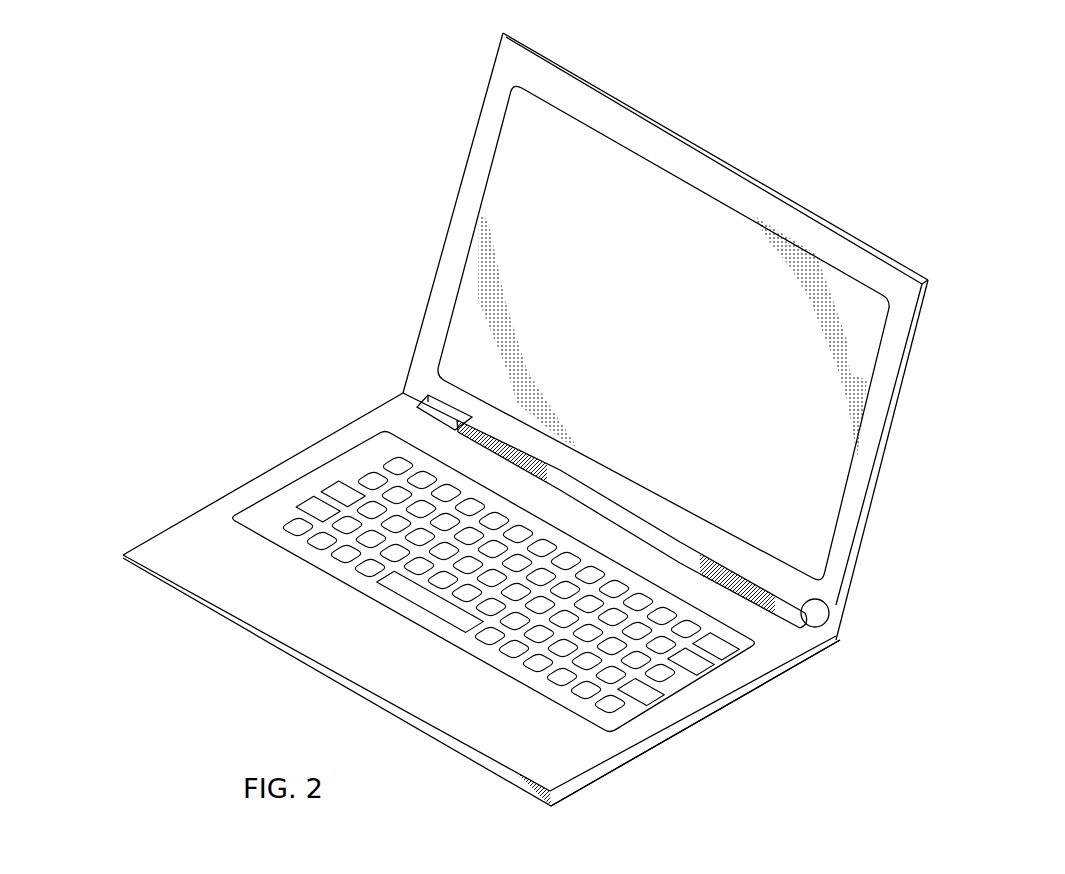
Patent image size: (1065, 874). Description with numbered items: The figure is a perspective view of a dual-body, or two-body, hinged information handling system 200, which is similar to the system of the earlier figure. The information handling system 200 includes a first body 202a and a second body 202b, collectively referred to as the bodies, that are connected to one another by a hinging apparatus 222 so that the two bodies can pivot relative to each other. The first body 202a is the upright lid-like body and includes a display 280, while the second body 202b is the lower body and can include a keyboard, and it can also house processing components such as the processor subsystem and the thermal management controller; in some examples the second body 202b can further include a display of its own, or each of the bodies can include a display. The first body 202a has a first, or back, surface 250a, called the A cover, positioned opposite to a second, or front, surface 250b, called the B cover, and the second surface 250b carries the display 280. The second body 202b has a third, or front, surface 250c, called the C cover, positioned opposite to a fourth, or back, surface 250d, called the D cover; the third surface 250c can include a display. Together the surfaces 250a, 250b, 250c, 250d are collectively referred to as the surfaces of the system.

The dual-body hinged information handling system 200 is at (823, 92).
The first body 202a is at (872, 457).
The second body 202b is at (267, 481).
The hinging apparatus 222 is at (837, 622).
The first (back) surface 250a is at (914, 365).
The second (front) surface 250b is at (433, 294).
The third (front) surface 250c is at (362, 414).
The fourth (back) surface 250d is at (626, 773).
The display 280 is at (832, 265).